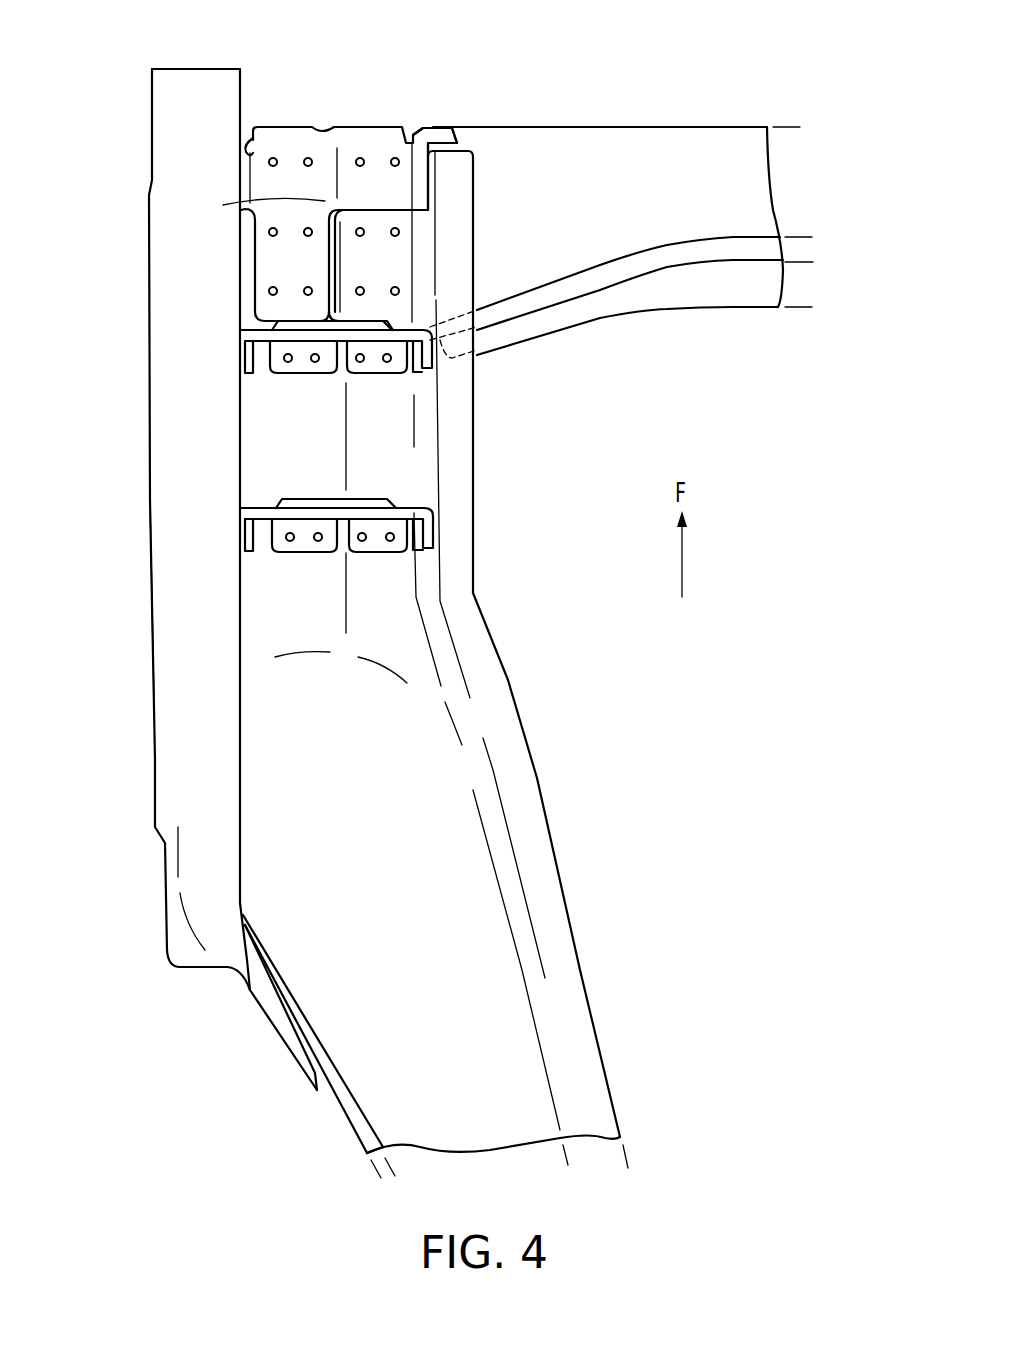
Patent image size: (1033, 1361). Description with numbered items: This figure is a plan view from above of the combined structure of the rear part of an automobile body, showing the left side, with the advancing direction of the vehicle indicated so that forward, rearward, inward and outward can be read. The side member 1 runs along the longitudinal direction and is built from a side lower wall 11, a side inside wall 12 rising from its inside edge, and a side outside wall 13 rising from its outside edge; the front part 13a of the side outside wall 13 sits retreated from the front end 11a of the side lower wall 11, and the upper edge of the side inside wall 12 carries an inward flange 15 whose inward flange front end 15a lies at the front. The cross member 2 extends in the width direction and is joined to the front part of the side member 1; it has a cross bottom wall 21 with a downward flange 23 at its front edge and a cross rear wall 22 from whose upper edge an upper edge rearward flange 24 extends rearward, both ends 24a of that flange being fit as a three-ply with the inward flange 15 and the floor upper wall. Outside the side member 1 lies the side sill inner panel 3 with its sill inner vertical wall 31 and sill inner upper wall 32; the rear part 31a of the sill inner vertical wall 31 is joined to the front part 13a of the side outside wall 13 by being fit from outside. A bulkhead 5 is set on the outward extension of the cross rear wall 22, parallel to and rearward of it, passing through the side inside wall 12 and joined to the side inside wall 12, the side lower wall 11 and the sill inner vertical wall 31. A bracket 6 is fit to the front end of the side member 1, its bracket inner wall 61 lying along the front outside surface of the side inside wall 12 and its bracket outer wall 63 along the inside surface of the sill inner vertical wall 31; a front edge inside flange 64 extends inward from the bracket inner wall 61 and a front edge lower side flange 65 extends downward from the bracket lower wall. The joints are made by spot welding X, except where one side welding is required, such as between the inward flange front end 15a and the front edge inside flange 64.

The side member 1 is at (551, 776).
The cross member 2 is at (681, 134).
The side sill inner panel 3 is at (150, 146).
The bulkhead 5 is at (303, 343).
The bracket 6 is at (313, 113).
The side lower wall 11 is at (435, 737).
The front end of the side lower wall 11a is at (375, 220).
The side inside wall 12 is at (429, 472).
The side outside wall 13 is at (350, 1097).
The front part of the side outside wall 13a is at (280, 977).
The inward flange 15 is at (542, 877).
The inward flange front end 15a is at (460, 263).
The cross bottom wall 21 is at (603, 153).
The cross rear wall 22 is at (670, 262).
The downward flange 23 is at (527, 123).
The upper edge rearward flange 24 is at (748, 292).
The both ends of the upper edge rearward flange 24a is at (477, 353).
The sill inner vertical wall 31 is at (245, 450).
The rear part of the sill inner vertical wall 31a is at (290, 1045).
The sill inner upper wall 32 is at (183, 513).
The bracket inner wall 61 is at (418, 172).
The bracket outer wall 63 is at (250, 147).
The front edge inside flange 64 is at (433, 123).
The front edge lower side flange 65 is at (285, 121).
The spot welding X is at (400, 165).